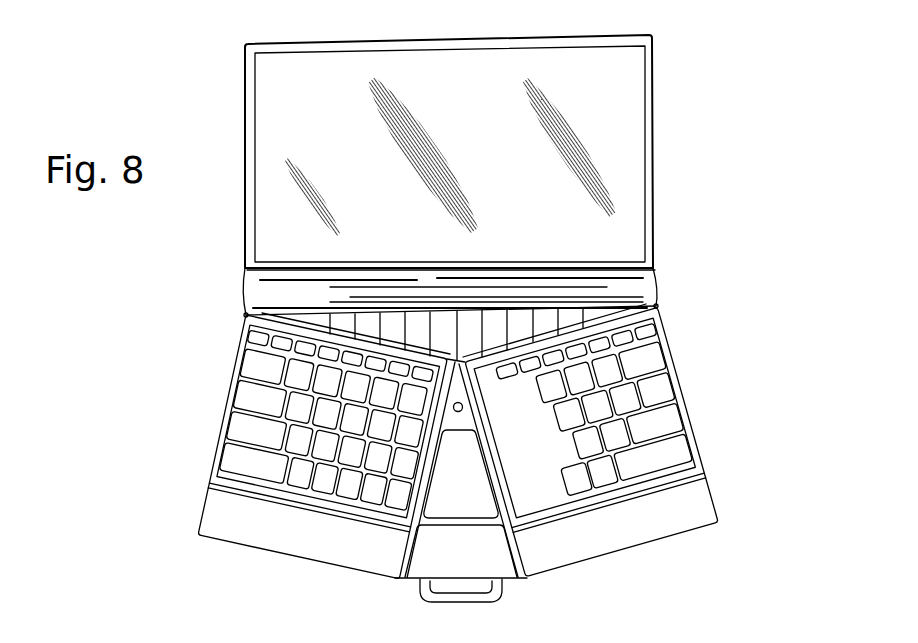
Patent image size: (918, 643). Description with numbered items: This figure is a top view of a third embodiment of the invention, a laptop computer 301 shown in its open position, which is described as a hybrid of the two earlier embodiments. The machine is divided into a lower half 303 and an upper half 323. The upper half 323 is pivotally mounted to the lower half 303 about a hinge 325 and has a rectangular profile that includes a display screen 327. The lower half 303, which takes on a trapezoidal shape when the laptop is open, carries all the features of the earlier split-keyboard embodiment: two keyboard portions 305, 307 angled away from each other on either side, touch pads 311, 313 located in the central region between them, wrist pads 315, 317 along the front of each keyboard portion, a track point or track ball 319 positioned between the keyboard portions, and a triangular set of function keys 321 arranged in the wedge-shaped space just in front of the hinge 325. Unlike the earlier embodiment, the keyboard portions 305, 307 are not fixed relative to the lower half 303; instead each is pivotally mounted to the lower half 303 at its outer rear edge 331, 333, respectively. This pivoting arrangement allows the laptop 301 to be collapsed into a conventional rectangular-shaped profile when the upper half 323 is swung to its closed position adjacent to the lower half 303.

The laptop computer 301 is at (712, 82).
The lower half 303 is at (350, 574).
The keyboard portion 305 is at (253, 394).
The keyboard portion 307 is at (660, 390).
The touch pad 311 is at (458, 478).
The touch pad 313 is at (483, 557).
The wrist pad 315 is at (283, 543).
The wrist pad 317 is at (633, 535).
The track point or track ball 319 is at (580, 398).
The triangular set of function keys 321 is at (497, 328).
The upper half 323 is at (240, 92).
The hinge 325 is at (247, 266).
The display screen 327 is at (473, 77).
The outer rear edge 331 is at (246, 316).
The outer rear edge 333 is at (658, 308).